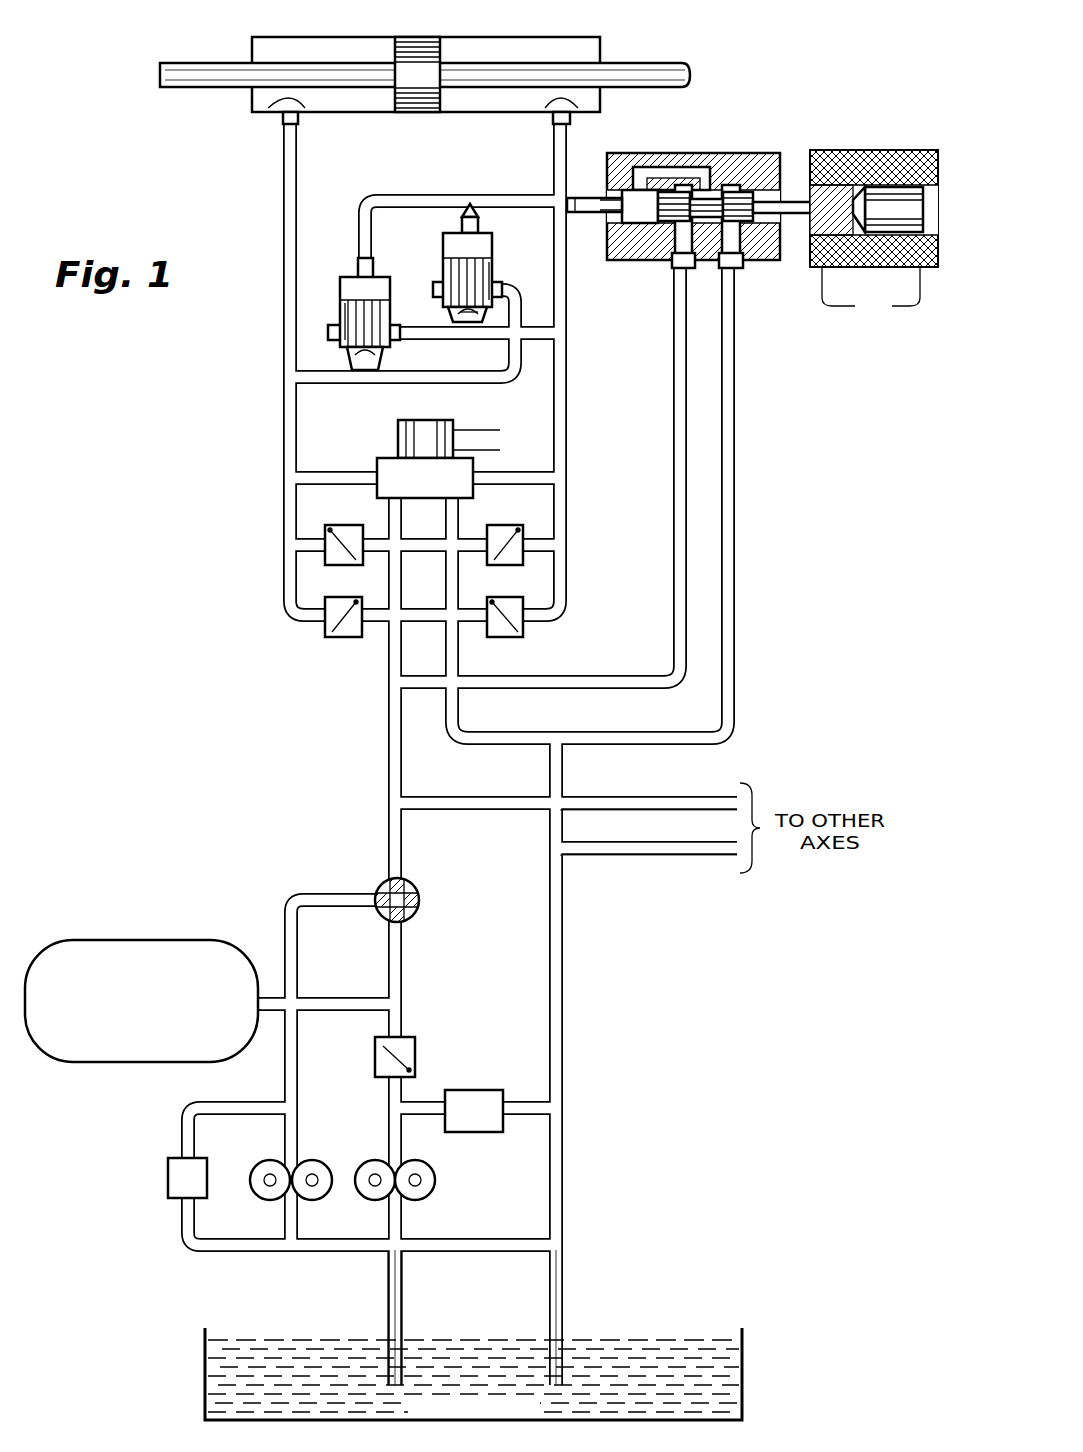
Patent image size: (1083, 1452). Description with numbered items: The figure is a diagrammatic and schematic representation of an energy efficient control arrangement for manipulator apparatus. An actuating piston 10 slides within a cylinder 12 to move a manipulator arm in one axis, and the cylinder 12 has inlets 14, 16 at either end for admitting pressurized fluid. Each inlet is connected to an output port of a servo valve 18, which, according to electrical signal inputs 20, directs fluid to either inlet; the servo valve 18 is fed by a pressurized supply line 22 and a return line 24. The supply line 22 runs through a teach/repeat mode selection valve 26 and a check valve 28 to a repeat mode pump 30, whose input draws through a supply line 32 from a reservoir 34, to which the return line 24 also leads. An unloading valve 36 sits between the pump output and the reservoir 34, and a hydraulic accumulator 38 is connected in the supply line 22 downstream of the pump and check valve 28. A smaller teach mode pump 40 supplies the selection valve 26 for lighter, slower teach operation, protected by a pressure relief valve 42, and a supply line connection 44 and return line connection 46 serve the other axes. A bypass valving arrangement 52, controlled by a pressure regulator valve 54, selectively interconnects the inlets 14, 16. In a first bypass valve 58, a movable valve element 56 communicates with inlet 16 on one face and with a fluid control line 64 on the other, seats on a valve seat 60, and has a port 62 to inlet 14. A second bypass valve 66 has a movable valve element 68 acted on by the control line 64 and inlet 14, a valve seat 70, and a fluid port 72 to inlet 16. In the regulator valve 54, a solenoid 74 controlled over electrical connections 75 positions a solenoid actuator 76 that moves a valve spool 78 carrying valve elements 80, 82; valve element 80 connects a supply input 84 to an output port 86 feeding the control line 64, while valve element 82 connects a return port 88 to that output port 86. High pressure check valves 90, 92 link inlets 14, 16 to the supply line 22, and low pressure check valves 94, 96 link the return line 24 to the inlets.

The actuating piston 10 is at (432, 48).
The cylinder 12 is at (603, 45).
The inlet 14 is at (268, 108).
The inlet 16 is at (582, 108).
The servo valve 18 is at (388, 468).
The electrical signal inputs 20 is at (470, 425).
The pressurized supply line 22 is at (388, 750).
The return line 24 is at (516, 745).
The teach/repeat mode selection valve 26 is at (381, 886).
The check valve 28 is at (416, 1050).
The repeat mode pump 30 is at (437, 1178).
The supply line 32 is at (405, 1290).
The reservoir 34 is at (748, 1342).
The unloading valve 36 is at (472, 1090).
The hydraulic accumulator 38 is at (168, 938).
The teach mode pump 40 is at (252, 1168).
The pressure relief valve 42 is at (168, 1178).
The supply line connection 44 is at (688, 797).
The return line connection 46 is at (692, 858).
The bypass valving arrangement 52 is at (424, 252).
The pressure regulator valve 54 is at (685, 221).
The movable valve element 56 is at (495, 272).
The first bypass valve 58 is at (495, 245).
The valve seat 60 is at (467, 318).
The port 62 is at (440, 290).
The fluid control line 64 is at (537, 200).
The second bypass valve 66 is at (345, 272).
The movable valve element 68 is at (350, 305).
The valve seat 70 is at (367, 362).
The fluid port 72 is at (396, 338).
The solenoid 74 is at (890, 215).
The electrical connections 75 is at (871, 296).
The solenoid actuator 76 is at (800, 200).
The valve spool 78 is at (712, 225).
The valve element 80 is at (666, 218).
The valve element 82 is at (745, 218).
The supply input 84 is at (672, 540).
The output port 86 is at (705, 165).
The return port 88 is at (738, 540).
The high pressure check valve 90 is at (352, 525).
The high pressure check valve 92 is at (500, 525).
The low pressure check valve 94 is at (345, 637).
The low pressure check valve 96 is at (505, 637).